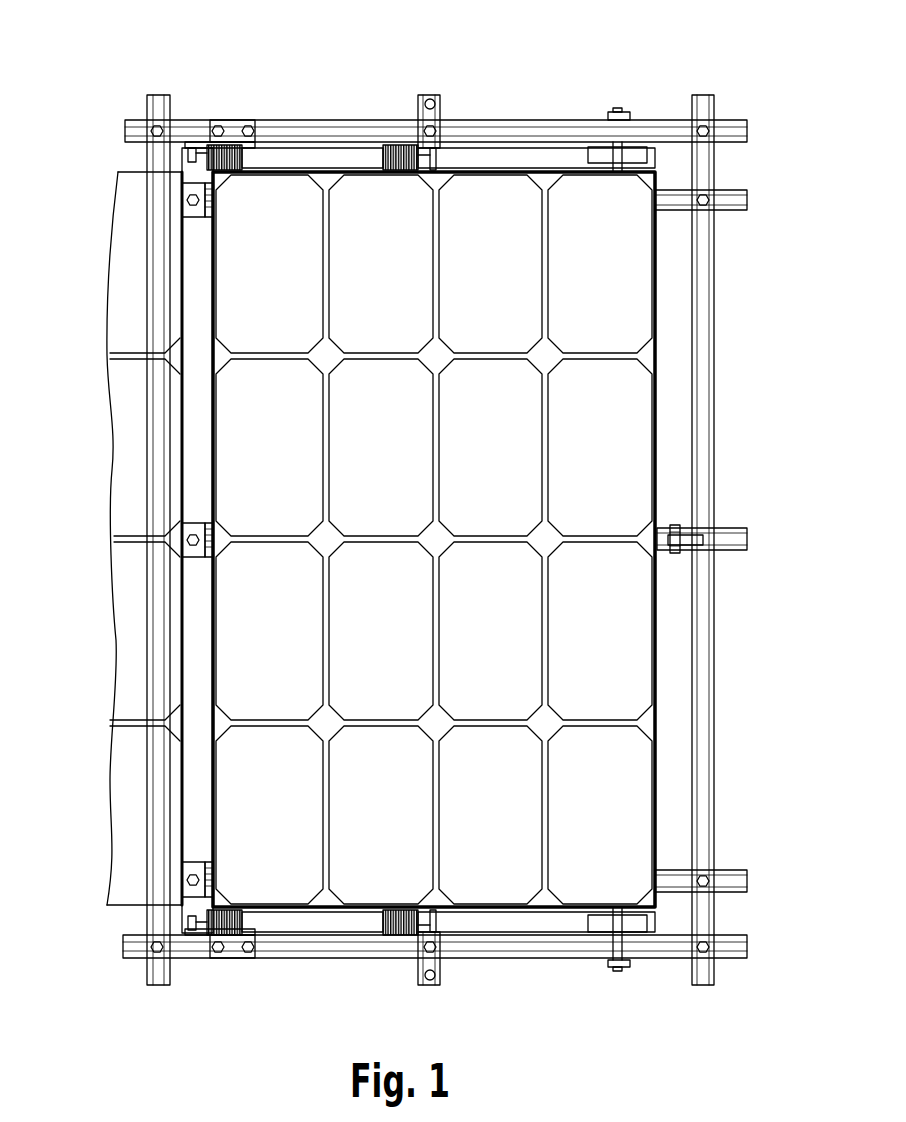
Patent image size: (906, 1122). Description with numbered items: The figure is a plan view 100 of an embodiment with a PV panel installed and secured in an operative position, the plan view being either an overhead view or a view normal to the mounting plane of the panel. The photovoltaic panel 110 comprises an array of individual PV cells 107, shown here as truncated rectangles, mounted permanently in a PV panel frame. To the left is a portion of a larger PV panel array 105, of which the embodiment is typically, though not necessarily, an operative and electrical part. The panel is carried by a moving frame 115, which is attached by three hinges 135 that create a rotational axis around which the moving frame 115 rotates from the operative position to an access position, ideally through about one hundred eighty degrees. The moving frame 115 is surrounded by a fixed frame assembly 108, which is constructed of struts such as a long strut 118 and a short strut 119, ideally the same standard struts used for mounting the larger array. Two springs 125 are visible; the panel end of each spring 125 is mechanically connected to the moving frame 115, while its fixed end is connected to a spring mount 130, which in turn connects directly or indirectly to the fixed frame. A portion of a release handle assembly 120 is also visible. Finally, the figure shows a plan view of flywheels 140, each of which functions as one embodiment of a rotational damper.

The plan view of PV panel frame with panel installed 100 is at (328, 90).
The portion of a larger PV panel array 105 is at (135, 227).
The individual PV cells 107 is at (630, 413).
The fixed frame assembly 108 is at (703, 167).
The photovoltaic (PV) panel 110 is at (590, 222).
The movable or moving frame 115 is at (655, 443).
The long strut 118 is at (723, 877).
The short strut 119 is at (732, 543).
The release handle assembly 120 is at (690, 530).
The spring 125 is at (400, 145).
The spring mount 130 is at (238, 125).
The hinge 135 is at (183, 192).
The flywheel 140 is at (632, 145).